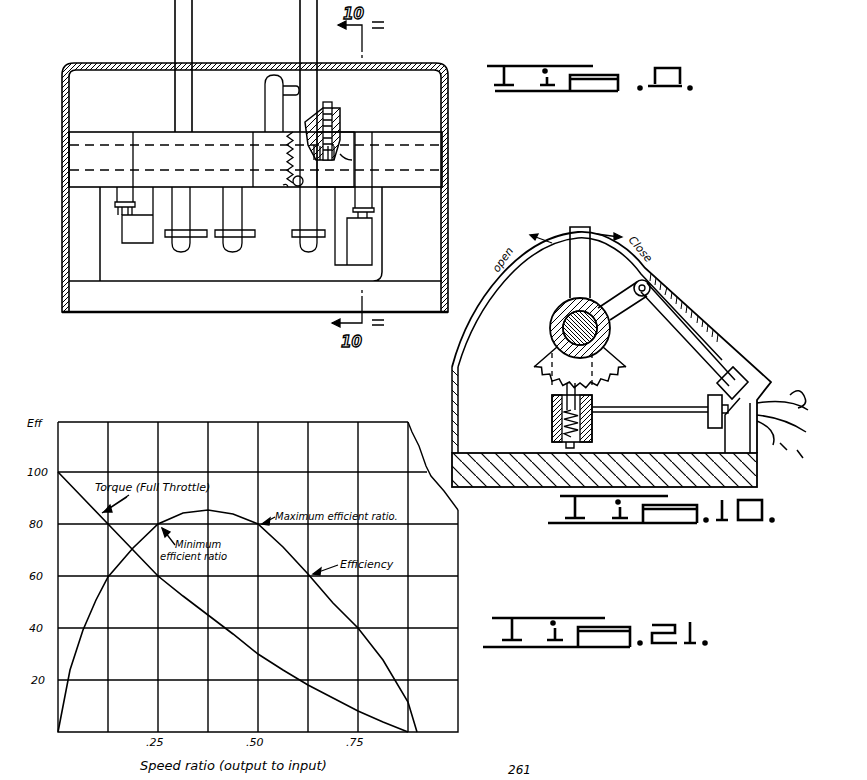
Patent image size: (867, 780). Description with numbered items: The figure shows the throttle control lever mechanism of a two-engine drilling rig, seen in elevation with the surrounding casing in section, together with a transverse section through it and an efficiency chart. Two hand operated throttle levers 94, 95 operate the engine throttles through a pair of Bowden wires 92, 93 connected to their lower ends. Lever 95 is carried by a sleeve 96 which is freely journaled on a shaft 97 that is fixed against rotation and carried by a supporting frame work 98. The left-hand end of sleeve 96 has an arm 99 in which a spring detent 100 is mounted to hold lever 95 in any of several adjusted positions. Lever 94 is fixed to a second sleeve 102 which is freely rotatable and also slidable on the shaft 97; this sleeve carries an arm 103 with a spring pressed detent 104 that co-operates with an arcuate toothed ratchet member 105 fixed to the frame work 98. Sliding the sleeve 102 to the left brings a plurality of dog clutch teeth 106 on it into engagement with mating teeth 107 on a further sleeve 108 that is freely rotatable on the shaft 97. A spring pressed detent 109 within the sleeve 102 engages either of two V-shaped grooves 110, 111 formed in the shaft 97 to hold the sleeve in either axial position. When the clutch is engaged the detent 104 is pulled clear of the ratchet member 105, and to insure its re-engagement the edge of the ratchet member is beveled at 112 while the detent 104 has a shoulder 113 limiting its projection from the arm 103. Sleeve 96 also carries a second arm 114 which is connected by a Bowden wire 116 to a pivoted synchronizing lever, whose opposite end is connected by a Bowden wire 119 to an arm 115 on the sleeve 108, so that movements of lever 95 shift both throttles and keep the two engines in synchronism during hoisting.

In FIG. 9, the Bowden wire 92 is at (294, 234).
In FIG. 10, the Bowden wire 92 is at (798, 407).
In FIG. 9, the Bowden wire 93 is at (206, 238).
In FIG. 10, the Bowden wire 93 is at (803, 458).
In FIG. 9, the throttle lever 94 is at (300, 22).
In FIG. 9, the throttle lever 95 is at (192, 22).
In FIG. 9, the sleeve 96 is at (212, 138).
In FIG. 9, the shaft 97 is at (330, 158).
In FIG. 9, the supporting frame work 98 is at (448, 214).
In FIG. 9, the arm 99 is at (142, 243).
In FIG. 9, the spring detent 100 is at (117, 210).
In FIG. 9, the sleeve 102 is at (350, 151).
In FIG. 9, the arm 103 is at (335, 264).
In FIG. 9, the spring pressed detent 104 is at (368, 217).
In FIG. 10, the spring pressed detent 104 is at (555, 393).
In FIG. 9, the arcuate toothed ratchet member 105 is at (372, 193).
In FIG. 9, the dog clutch teeth 106 is at (297, 188).
In FIG. 9, the mating teeth 107 is at (282, 186).
In FIG. 9, the sleeve 108 is at (270, 176).
In FIG. 9, the spring pressed detent 109 is at (322, 155).
In FIG. 9, the V-shaped groove 110 is at (322, 160).
In FIG. 9, the V-shaped groove 111 is at (343, 155).
In FIG. 9, the beveled edge 112 is at (352, 213).
In FIG. 10, the shoulder 113 is at (551, 412).
In FIG. 9, the second arm 114 is at (226, 203).
In FIG. 9, the arm 115 is at (270, 118).
In FIG. 9, the Bowden wire 116 is at (253, 238).
In FIG. 10, the Bowden wire 116 is at (788, 395).
In FIG. 9, the Bowden wire 119 is at (258, 88).
In FIG. 10, the Bowden wire 119 is at (777, 441).